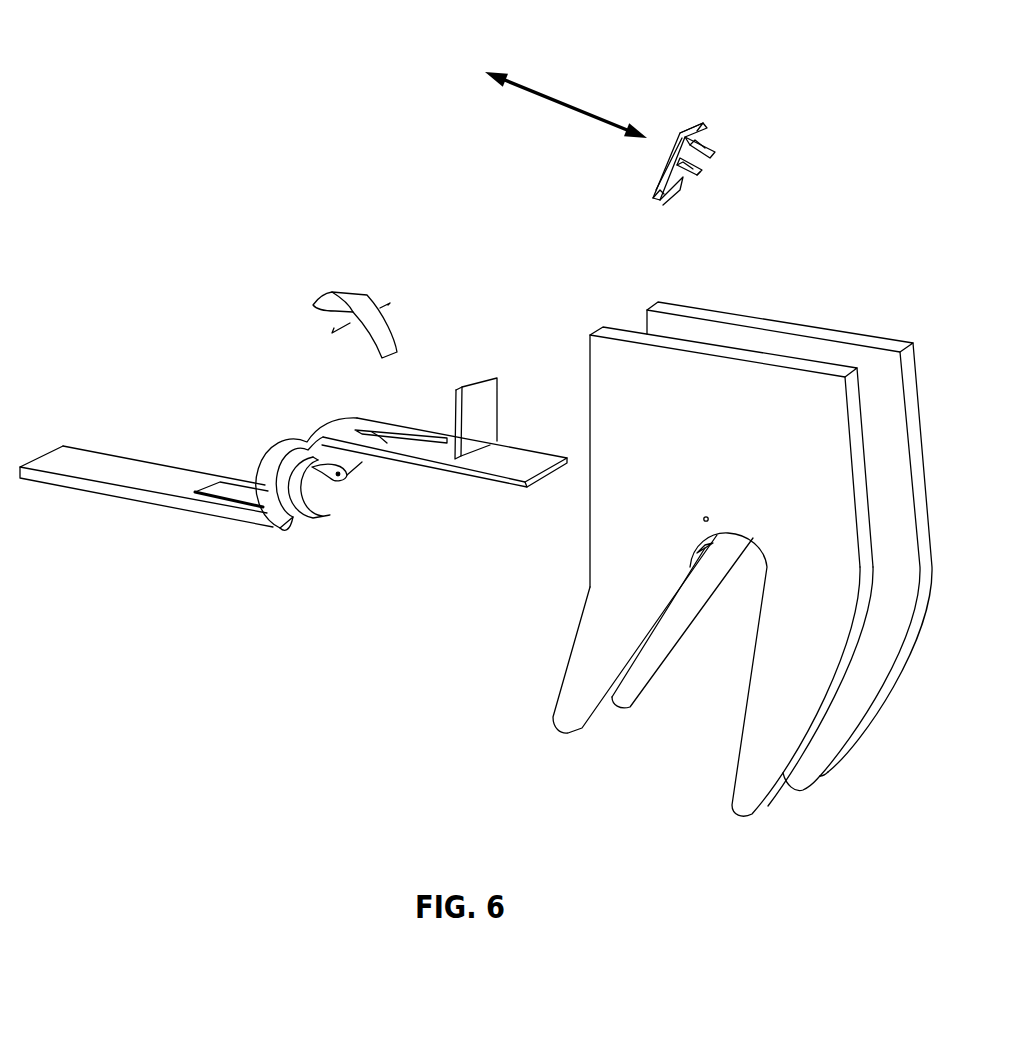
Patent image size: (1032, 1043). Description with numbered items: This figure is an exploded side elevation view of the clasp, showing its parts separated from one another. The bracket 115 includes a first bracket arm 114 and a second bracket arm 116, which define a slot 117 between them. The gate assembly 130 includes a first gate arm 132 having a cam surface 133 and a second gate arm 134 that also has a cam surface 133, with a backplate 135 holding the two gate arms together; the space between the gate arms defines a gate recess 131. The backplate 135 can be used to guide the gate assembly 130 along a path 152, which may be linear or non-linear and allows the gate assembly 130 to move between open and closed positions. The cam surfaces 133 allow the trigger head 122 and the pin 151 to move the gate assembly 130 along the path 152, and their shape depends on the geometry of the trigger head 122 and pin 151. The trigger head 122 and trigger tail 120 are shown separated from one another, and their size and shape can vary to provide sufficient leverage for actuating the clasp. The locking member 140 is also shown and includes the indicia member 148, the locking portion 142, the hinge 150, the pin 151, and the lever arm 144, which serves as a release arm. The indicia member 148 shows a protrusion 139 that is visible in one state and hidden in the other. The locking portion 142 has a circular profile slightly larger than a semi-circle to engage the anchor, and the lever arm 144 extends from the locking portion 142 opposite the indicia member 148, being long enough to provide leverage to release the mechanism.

The first bracket arm 114 is at (783, 710).
The bracket 115 is at (610, 351).
The second bracket arm 116 is at (597, 632).
The slot 117 is at (697, 745).
The trigger tail 120 is at (387, 338).
The trigger head 122 is at (323, 309).
The gate assembly 130 is at (675, 102).
The gate recess 131 is at (714, 176).
The first gate arm 132 is at (692, 130).
The cam surface 133 is at (703, 147).
The second gate arm 134 is at (663, 202).
The backplate 135 is at (652, 173).
The protrusion 139 is at (487, 403).
The locking member 140 is at (376, 450).
The locking portion 142 is at (312, 472).
The lever arm 144 is at (123, 500).
The indicia member 148 is at (485, 476).
The hinge 150 is at (302, 443).
The pin 151 is at (267, 465).
The path 152 is at (560, 100).